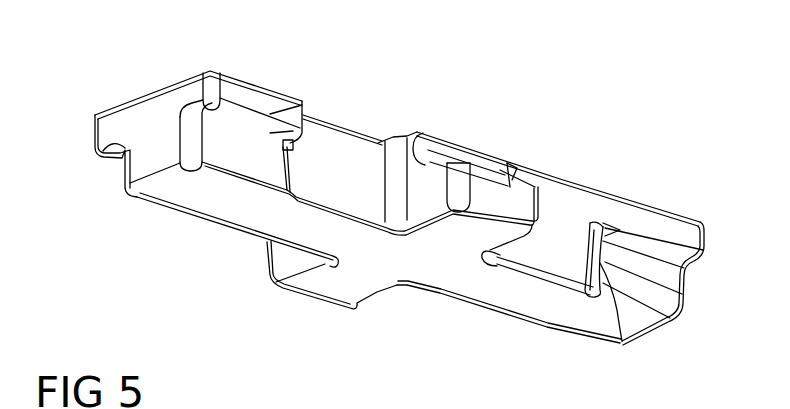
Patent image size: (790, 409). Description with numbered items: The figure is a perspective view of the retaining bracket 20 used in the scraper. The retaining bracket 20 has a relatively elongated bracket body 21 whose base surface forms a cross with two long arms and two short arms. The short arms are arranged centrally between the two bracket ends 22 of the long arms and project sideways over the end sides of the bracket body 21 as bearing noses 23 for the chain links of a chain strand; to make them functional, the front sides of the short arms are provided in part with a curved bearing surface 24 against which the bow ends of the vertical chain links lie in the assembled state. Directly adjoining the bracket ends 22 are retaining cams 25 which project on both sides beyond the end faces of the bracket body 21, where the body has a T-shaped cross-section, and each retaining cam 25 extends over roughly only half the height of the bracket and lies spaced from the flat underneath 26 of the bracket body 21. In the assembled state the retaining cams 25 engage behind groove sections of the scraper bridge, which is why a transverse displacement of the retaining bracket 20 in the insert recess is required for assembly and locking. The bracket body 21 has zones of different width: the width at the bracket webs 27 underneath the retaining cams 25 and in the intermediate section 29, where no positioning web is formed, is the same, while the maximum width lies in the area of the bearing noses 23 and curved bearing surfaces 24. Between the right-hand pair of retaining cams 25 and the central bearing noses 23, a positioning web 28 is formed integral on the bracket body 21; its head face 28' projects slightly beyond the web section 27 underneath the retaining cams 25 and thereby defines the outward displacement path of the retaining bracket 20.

The retaining bracket 20 is at (600, 117).
The bracket body 21 is at (310, 150).
The bracket ends 22 is at (153, 132).
The bearing noses 23 is at (507, 190).
The curved bearing surface 24 is at (447, 150).
The retaining cams 25 is at (247, 90).
The flat underneath 26 is at (422, 253).
The bracket webs 27 is at (237, 153).
The positioning web 28 is at (576, 156).
The head face 28' is at (564, 307).
The intermediate section 29 is at (350, 162).